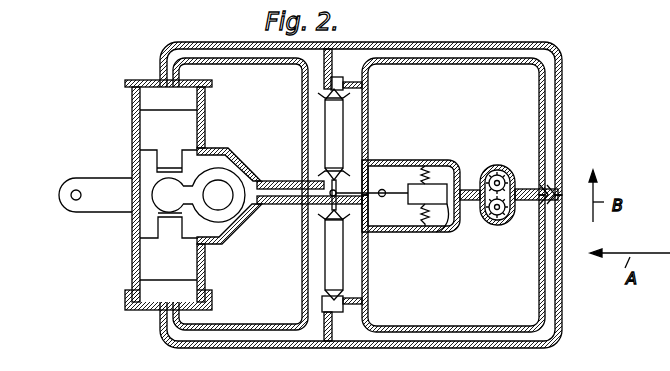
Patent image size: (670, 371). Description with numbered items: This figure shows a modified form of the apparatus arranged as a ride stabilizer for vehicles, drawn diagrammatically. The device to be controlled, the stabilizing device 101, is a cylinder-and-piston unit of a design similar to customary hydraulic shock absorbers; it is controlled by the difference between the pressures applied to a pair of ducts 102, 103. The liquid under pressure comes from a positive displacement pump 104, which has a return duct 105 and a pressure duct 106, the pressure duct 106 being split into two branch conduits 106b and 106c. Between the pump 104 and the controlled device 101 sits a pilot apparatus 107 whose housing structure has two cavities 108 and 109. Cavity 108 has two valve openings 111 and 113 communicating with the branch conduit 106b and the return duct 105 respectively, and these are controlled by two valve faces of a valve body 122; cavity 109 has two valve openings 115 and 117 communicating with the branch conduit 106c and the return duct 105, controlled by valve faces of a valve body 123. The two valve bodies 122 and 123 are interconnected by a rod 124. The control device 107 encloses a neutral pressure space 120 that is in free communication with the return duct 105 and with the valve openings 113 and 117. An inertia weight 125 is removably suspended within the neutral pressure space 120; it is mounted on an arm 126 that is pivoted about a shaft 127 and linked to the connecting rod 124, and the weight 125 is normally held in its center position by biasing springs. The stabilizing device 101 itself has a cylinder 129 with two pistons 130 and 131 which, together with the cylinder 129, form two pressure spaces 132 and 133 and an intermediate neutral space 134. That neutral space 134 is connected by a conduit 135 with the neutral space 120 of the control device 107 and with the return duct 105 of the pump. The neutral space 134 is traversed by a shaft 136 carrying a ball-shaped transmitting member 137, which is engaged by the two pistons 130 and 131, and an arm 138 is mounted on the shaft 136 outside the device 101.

The controlled device 101 is at (238, 142).
The duct 102 is at (248, 54).
The duct 103 is at (230, 340).
The positive displacement pump 104 is at (492, 226).
The return duct 105 is at (468, 190).
The pressure duct 106 is at (522, 189).
The branch conduit 106b is at (482, 38).
The branch conduit 106c is at (470, 330).
The pilot apparatus 107 is at (355, 128).
The cavity 108 is at (355, 107).
The cavity 109 is at (352, 241).
The valve opening 111 is at (350, 93).
The valve opening 113 is at (325, 176).
The valve opening 115 is at (352, 292).
The valve opening 117 is at (325, 219).
The neutral pressure space 120 is at (404, 168).
The valve body 122 is at (336, 122).
The valve body 123 is at (340, 258).
The rod 124 is at (410, 186).
The inertia weight 125 is at (438, 224).
The arm 126 is at (421, 214).
The shaft 127 is at (398, 205).
The cylinder 129 is at (135, 228).
The piston 130 is at (147, 127).
The piston 131 is at (145, 264).
The pressure space 132 is at (143, 97).
The pressure space 133 is at (150, 288).
The neutral space 134 is at (215, 228).
The conduit 135 is at (274, 213).
The shaft 136 is at (221, 206).
The ball-shaped transmitting member 137 is at (165, 190).
The arm 138 is at (68, 200).